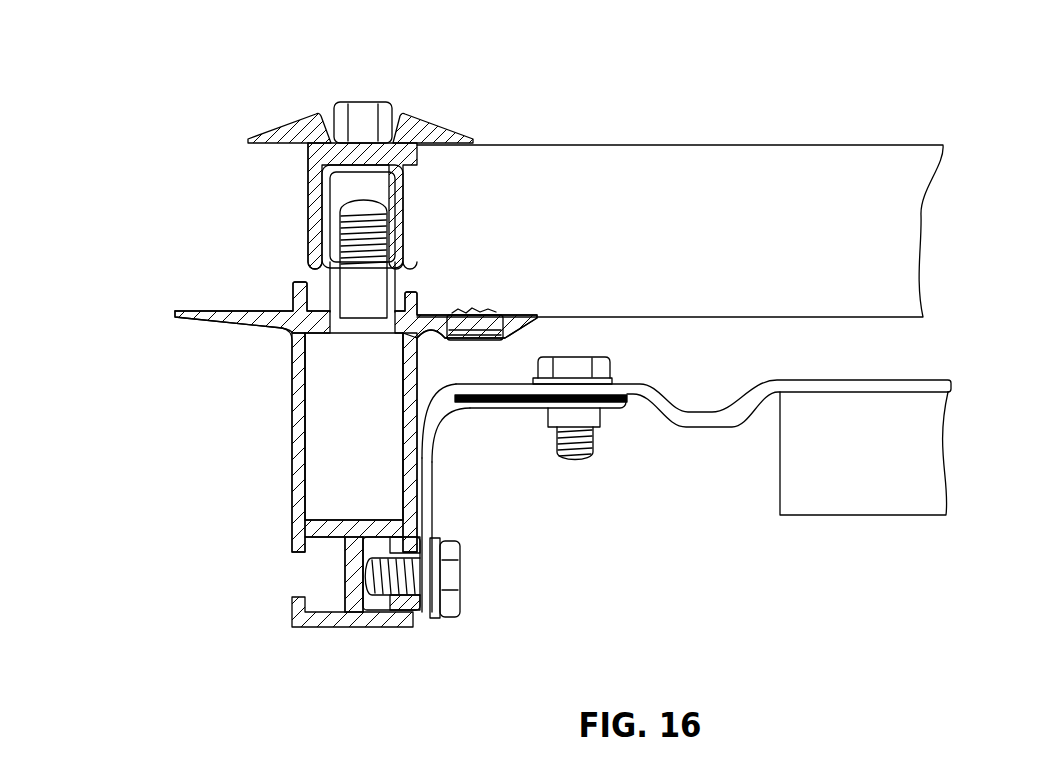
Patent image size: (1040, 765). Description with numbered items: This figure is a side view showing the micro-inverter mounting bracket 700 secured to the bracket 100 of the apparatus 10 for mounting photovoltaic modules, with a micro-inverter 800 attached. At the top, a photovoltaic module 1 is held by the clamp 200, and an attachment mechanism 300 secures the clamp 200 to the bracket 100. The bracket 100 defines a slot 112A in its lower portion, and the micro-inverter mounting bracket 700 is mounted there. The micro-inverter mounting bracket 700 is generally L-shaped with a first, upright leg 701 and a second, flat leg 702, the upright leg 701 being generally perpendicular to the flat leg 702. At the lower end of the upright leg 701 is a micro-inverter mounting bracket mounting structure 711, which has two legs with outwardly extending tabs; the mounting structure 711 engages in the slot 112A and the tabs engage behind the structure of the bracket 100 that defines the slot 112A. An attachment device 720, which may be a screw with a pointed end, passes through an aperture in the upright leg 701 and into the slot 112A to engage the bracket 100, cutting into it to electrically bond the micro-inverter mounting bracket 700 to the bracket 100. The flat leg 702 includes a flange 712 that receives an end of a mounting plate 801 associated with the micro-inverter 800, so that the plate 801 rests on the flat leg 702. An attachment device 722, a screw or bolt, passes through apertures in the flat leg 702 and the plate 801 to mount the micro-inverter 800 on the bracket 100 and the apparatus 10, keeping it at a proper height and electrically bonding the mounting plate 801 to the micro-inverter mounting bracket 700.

The photovoltaic module 1 is at (706, 152).
The apparatus for mounting photovoltaic modules 10 is at (258, 362).
The bracket 100 is at (292, 432).
The slot 112A is at (374, 608).
The clamp 200 is at (402, 116).
The attachment mechanism 300 is at (358, 100).
The micro-inverter mounting bracket 700 is at (450, 474).
The upright leg 701 is at (432, 512).
The flat leg 702 is at (512, 410).
The micro-inverter mounting bracket mounting structure 711 is at (412, 606).
The flange 712 is at (452, 383).
The attachment device 720 is at (462, 580).
The attachment device 722 is at (593, 350).
The micro-inverter 800 is at (925, 475).
The mounting plate 801 is at (686, 392).